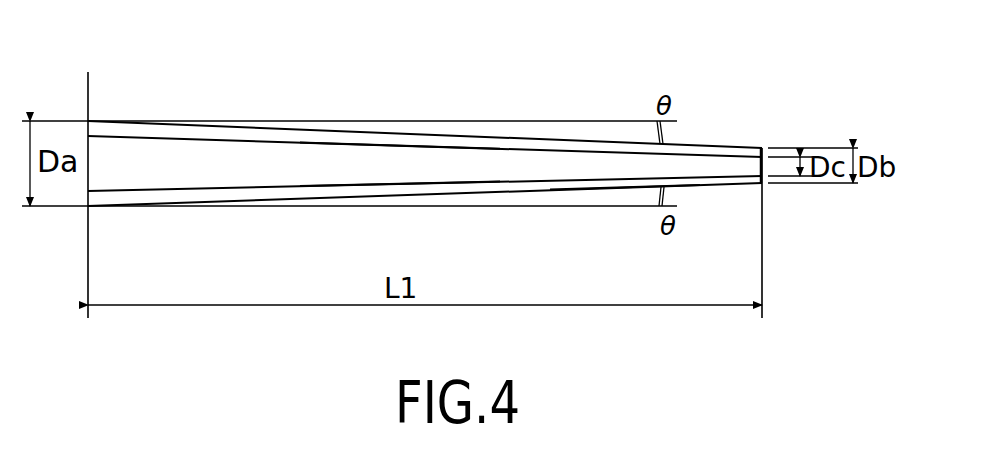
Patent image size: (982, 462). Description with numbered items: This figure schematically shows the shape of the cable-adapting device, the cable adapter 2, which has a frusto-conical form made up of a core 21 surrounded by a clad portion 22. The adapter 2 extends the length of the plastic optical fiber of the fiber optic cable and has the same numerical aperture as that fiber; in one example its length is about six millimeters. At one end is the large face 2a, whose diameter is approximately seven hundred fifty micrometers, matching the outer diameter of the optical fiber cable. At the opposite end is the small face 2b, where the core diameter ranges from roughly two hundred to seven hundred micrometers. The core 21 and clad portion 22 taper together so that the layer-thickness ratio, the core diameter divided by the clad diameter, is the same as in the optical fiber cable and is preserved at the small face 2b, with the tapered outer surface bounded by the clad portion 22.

The cable adapter 2 is at (611, 117).
The large face 2a is at (90, 166).
The small face 2b is at (761, 163).
The core 21 is at (675, 163).
The clad portion 22 is at (728, 183).